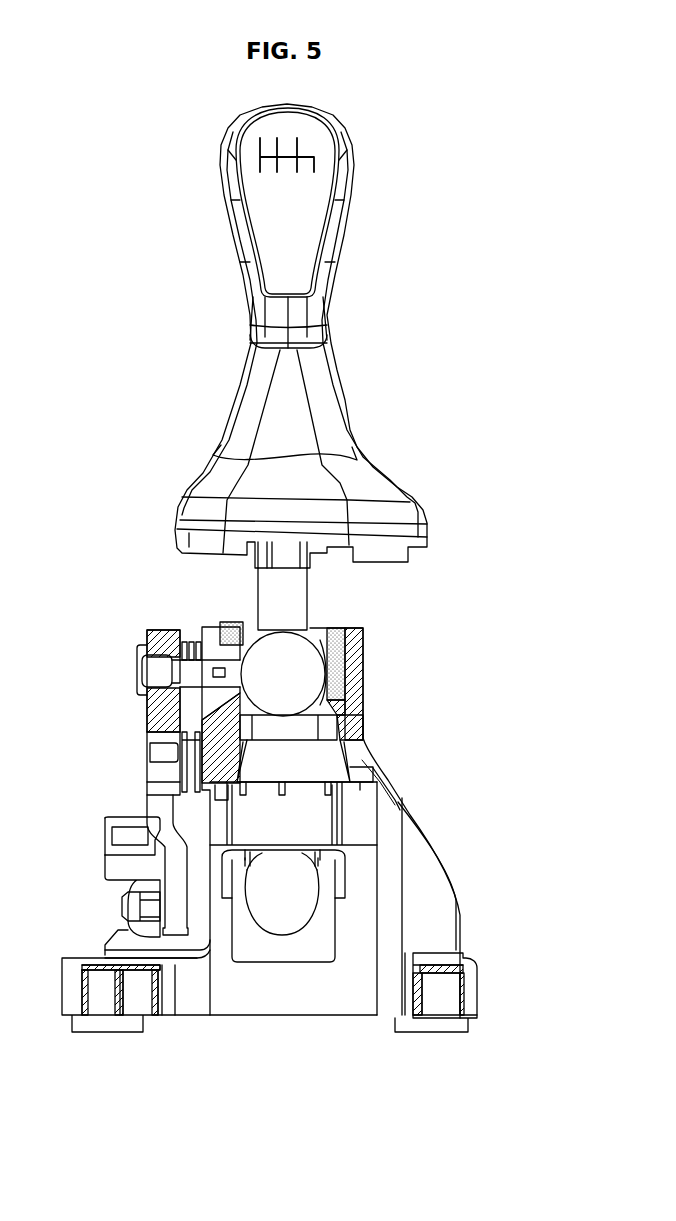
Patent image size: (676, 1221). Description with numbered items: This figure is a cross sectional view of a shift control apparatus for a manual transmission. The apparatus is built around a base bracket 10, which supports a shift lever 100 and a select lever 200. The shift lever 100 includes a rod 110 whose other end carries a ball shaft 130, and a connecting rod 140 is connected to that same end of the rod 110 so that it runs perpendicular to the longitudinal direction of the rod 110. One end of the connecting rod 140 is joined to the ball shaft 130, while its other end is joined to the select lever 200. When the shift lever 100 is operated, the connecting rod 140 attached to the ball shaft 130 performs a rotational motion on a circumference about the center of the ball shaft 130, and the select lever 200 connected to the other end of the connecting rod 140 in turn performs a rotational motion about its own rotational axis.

The shift lever 100 is at (347, 375).
The rod 110 is at (300, 605).
The ball shaft 130 is at (297, 678).
The connecting rod 140 is at (175, 667).
The select lever 200 is at (146, 722).
The base bracket 10 is at (460, 918).